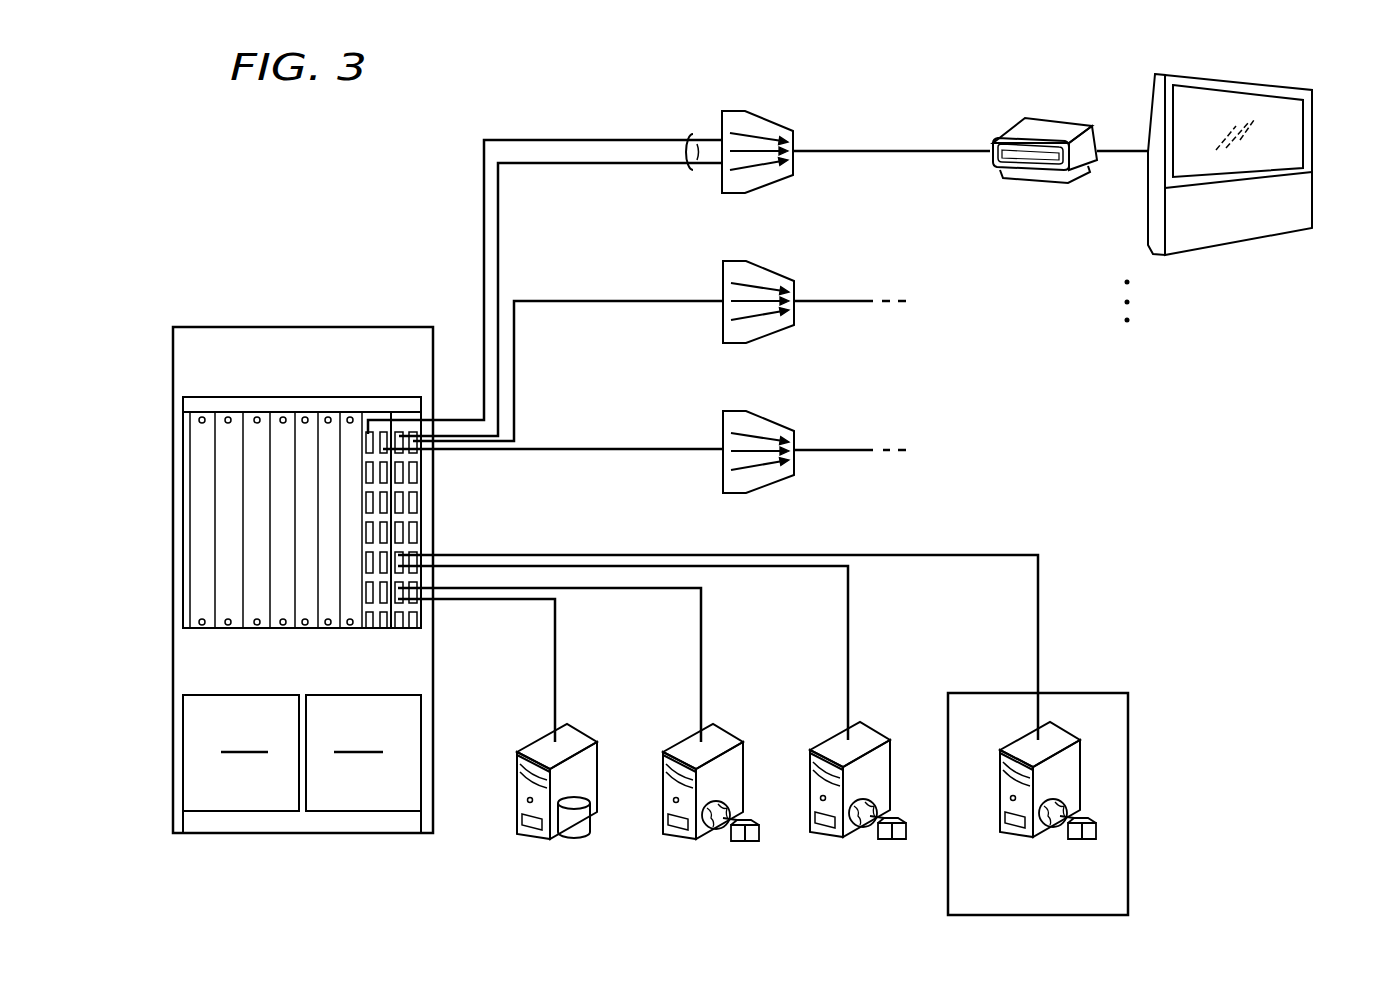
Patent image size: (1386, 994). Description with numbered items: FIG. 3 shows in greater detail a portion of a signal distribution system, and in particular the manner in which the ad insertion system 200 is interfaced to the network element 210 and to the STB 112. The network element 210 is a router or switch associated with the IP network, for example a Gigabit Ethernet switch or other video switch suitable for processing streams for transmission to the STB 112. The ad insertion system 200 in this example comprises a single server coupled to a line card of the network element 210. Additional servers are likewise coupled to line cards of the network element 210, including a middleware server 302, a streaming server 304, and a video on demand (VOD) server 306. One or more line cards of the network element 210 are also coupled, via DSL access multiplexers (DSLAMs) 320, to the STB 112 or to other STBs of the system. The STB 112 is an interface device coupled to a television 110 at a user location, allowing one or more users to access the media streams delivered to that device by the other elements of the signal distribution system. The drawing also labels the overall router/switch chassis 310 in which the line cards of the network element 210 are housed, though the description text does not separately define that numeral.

The television 110 is at (1295, 133).
The interface device 112 is at (1033, 127).
The ad insertion system 200 is at (1055, 733).
The network element 210 is at (337, 327).
The middleware server 302 is at (580, 733).
The streaming server 304 is at (725, 733).
The video on demand (VOD) server 306 is at (868, 733).
The router/switch chassis 310 is at (183, 660).
The DSL access multiplexers (DSLAMs) 320 is at (793, 176).